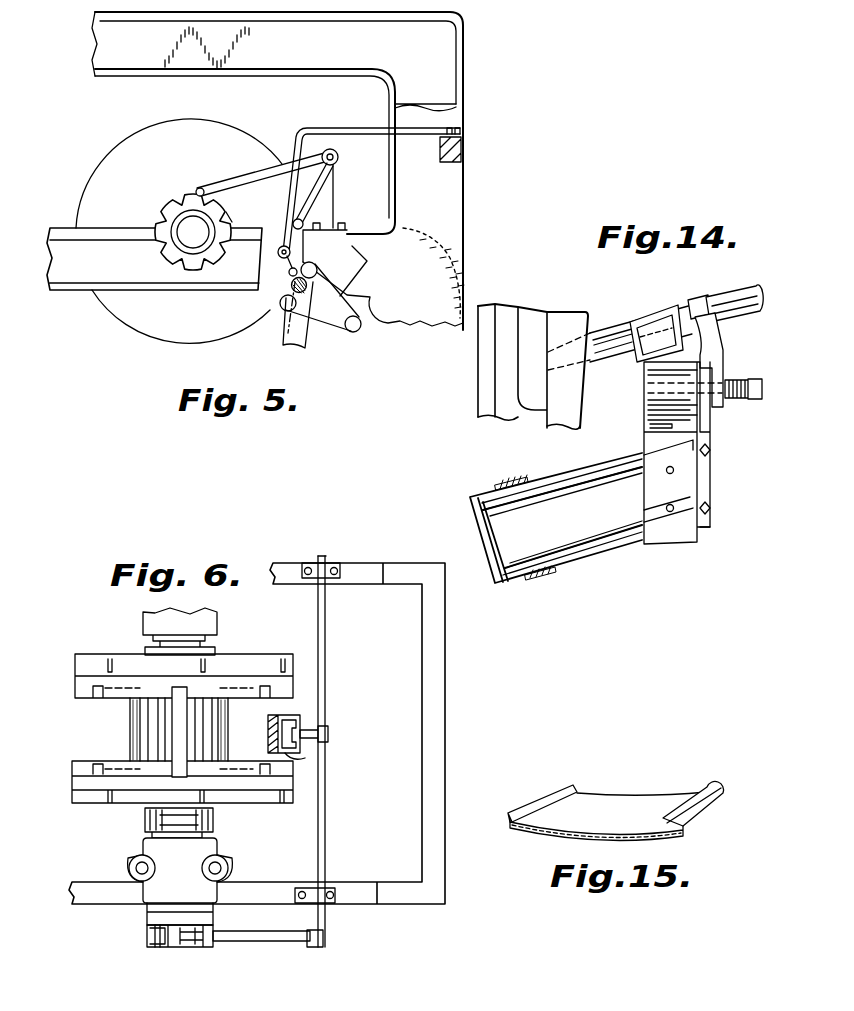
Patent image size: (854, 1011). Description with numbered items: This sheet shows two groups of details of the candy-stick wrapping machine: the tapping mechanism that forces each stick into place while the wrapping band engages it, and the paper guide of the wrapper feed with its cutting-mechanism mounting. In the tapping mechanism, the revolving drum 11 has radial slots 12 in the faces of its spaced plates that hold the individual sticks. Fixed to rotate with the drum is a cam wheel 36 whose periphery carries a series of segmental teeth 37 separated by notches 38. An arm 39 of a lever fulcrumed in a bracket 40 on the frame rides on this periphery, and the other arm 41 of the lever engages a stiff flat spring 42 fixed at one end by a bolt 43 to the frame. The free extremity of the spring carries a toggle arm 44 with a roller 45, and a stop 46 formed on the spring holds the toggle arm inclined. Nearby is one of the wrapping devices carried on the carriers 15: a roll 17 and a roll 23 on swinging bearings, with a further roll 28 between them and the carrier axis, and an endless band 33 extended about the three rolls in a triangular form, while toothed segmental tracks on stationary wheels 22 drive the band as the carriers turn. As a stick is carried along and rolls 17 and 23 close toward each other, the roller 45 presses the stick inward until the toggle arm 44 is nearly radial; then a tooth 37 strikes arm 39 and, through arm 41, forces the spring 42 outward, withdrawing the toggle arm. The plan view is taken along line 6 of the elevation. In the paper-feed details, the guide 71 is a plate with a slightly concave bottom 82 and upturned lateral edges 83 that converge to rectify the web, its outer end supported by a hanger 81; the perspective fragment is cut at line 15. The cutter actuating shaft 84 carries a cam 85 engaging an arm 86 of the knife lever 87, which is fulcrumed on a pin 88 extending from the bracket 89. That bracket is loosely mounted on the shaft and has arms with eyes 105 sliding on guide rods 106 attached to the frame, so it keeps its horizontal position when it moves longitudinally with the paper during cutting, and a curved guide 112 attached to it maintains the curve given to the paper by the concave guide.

In FIG. 5, the section line 6— 6 is at (515, 168).
In FIG. 5, the revolving drum 11 is at (105, 167).
In FIG. 6, the revolving drum 11 is at (153, 730).
In FIG. 6, the radial slots 12 is at (283, 778).
In FIG. 14, the carriers 15 is at (570, 597).
In FIG. 5, the roll 17 is at (285, 325).
In FIG. 5, the stationary wheels 22 is at (365, 255).
In FIG. 5, the roll 23 is at (320, 270).
In FIG. 5, the roll 28 is at (357, 327).
In FIG. 5, the endless band 33 is at (347, 327).
In FIG. 5, the cam wheel 36 is at (177, 216).
In FIG. 6, the cam wheel 36 is at (167, 948).
In FIG. 5, the segmental teeth 37 is at (200, 190).
In FIG. 6, the segmental teeth 37 is at (148, 937).
In FIG. 5, the notches 38 is at (228, 215).
In FIG. 6, the notches 38 is at (153, 947).
In FIG. 5, the arm 39 is at (262, 180).
In FIG. 6, the arm 39 is at (277, 941).
In FIG. 5, the bracket 40 is at (334, 192).
In FIG. 6, the bracket 40 is at (319, 893).
In FIG. 5, the arm 41 is at (303, 142).
In FIG. 6, the arm 41 is at (305, 727).
In FIG. 5, the flat spring 42 is at (288, 212).
In FIG. 6, the flat spring 42 is at (270, 733).
In FIG. 5, the bolt 43 is at (290, 252).
In FIG. 6, the bolt 43 is at (293, 712).
In FIG. 5, the toggle arm 44 is at (283, 270).
In FIG. 6, the toggle arm 44 is at (303, 758).
In FIG. 5, the roller 45 is at (285, 310).
In FIG. 6, the roller 45 is at (330, 745).
In FIG. 5, the stop 46 is at (282, 255).
In FIG. 14, the guide 71 is at (474, 536).
In FIG. 14, the hanger 81 is at (530, 580).
In FIG. 14, the concave bottom 82 is at (556, 518).
In FIG. 14, the upturned lateral edges 83 is at (618, 543).
In FIG. 14, the cutter actuating shaft 84 is at (728, 298).
In FIG. 14, the cam 85 is at (697, 300).
In FIG. 14, the arm 86 is at (720, 350).
In FIG. 14, the lever 87 is at (707, 420).
In FIG. 14, the pin 88 is at (705, 379).
In FIG. 14, the bracket 89 is at (647, 423).
In FIG. 14, the eyes 105 is at (652, 320).
In FIG. 14, the guide rods 106 is at (603, 343).
In FIG. 14, the curved guide 112 is at (663, 488).